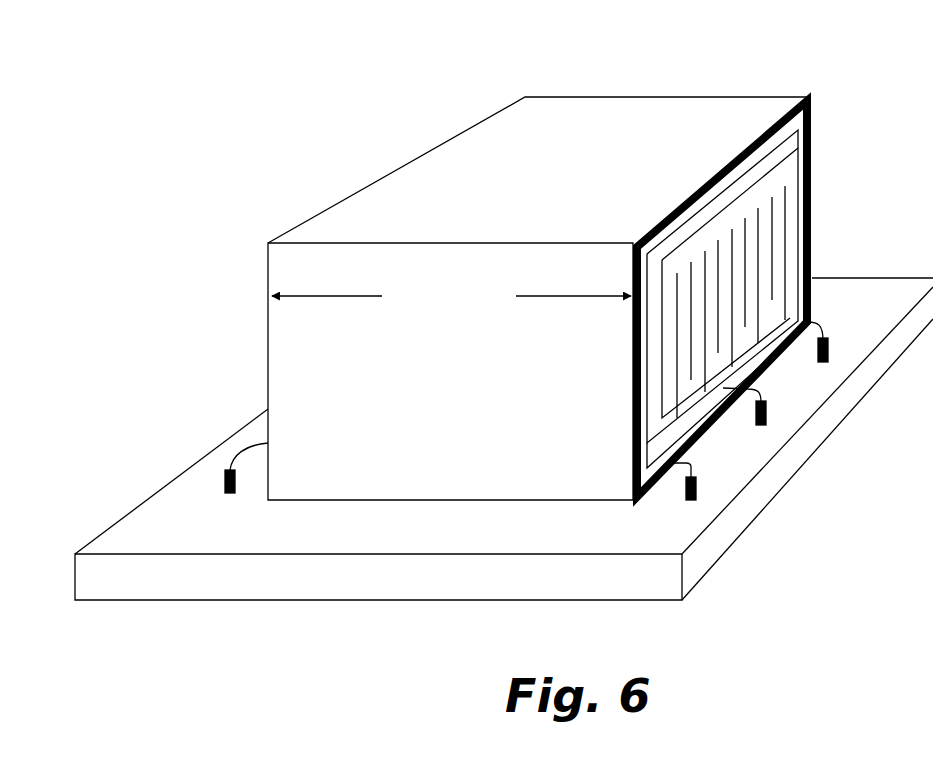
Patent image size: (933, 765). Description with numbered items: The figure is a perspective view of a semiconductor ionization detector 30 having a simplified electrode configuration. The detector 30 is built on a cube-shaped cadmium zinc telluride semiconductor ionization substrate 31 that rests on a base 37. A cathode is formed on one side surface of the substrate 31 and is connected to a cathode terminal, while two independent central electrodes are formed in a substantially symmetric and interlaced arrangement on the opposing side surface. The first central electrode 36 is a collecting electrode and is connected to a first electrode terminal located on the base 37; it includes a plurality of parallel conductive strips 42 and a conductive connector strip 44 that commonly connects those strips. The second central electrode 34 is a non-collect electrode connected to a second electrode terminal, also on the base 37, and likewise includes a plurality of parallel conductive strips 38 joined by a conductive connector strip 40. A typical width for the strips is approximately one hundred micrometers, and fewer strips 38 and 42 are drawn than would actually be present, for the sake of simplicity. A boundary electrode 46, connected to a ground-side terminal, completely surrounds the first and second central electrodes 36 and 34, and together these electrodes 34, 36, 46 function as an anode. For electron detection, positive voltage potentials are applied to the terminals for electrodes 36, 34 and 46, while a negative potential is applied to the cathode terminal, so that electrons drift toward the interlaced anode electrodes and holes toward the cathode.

The semiconductor ionization detector 30 is at (563, 93).
The semiconductor ionization substrate 31 is at (462, 190).
The second central electrode 34 is at (650, 236).
The first central electrode 36 is at (692, 227).
The base 37 is at (780, 466).
The parallel conductive strips 38 is at (758, 208).
The conductive connector strip 40 is at (633, 310).
The parallel conductive strips 42 is at (722, 275).
The conductive connector strip 44 is at (812, 207).
The boundary electrode 46 is at (812, 122).